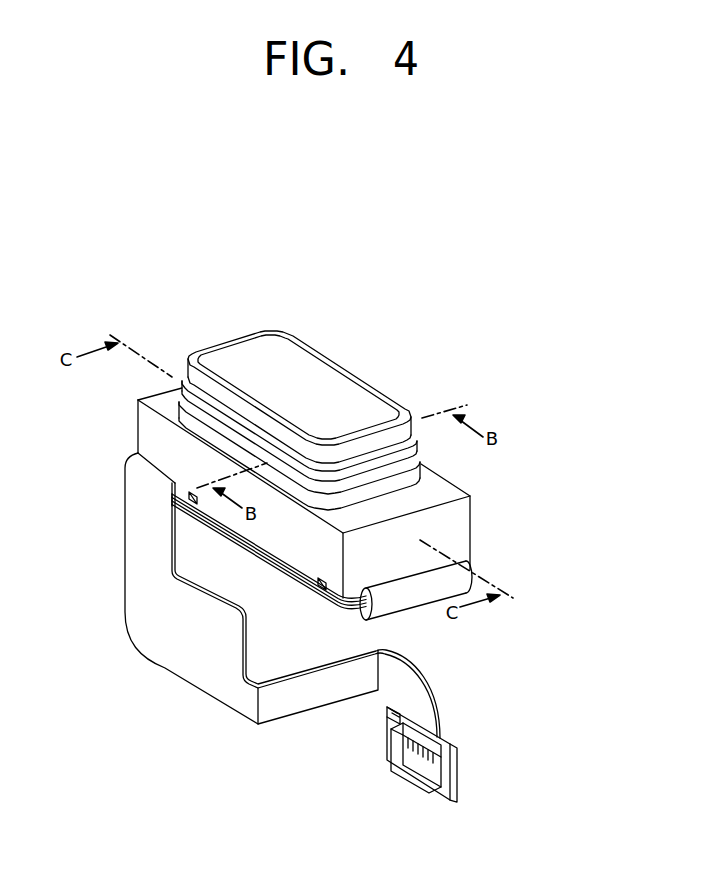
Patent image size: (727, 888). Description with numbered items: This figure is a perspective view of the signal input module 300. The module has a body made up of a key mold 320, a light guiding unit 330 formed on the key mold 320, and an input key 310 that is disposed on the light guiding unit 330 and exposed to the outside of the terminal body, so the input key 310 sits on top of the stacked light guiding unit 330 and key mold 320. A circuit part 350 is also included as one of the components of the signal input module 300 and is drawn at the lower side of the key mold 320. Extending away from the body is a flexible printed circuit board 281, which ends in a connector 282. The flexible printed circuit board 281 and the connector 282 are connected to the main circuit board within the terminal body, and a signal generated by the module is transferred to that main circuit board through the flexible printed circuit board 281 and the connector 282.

The signal input module 300 is at (330, 307).
The input key 310 is at (400, 420).
The key mold 320 is at (443, 526).
The light guiding unit 330 is at (414, 471).
The circuit part 350 is at (398, 598).
The flexible printed circuit board 281 is at (180, 638).
The connector 282 is at (407, 770).